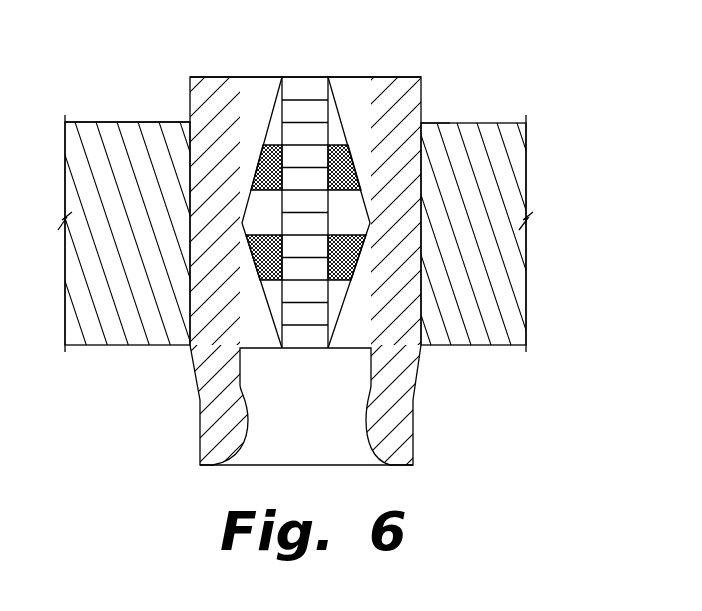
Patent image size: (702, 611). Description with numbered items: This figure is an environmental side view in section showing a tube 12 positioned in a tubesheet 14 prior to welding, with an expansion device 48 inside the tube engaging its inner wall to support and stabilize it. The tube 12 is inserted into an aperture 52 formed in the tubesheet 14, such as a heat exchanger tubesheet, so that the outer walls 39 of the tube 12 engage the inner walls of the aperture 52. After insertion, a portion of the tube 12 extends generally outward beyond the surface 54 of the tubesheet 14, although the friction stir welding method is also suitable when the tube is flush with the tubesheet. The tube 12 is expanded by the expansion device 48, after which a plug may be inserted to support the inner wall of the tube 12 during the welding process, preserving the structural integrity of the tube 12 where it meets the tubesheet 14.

The tube 12 is at (414, 100).
The tubesheet 14 is at (488, 123).
The outer walls 39 is at (423, 116).
The expansion device 48 is at (350, 152).
The aperture 52 is at (200, 97).
The surface 54 is at (104, 121).